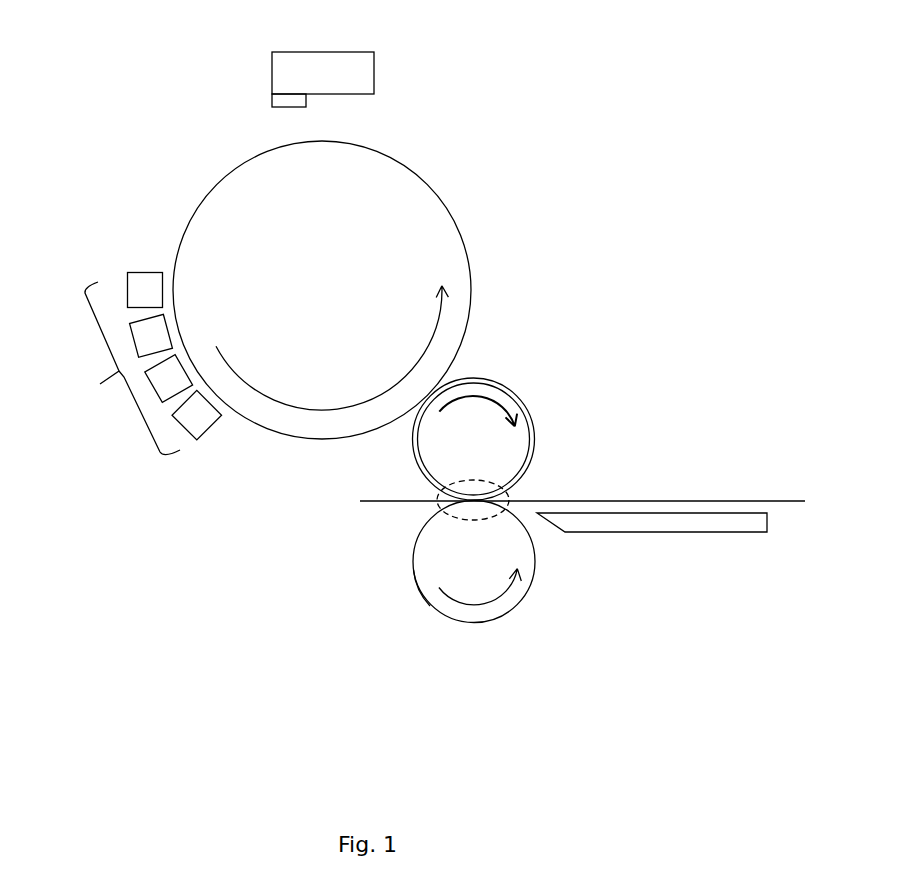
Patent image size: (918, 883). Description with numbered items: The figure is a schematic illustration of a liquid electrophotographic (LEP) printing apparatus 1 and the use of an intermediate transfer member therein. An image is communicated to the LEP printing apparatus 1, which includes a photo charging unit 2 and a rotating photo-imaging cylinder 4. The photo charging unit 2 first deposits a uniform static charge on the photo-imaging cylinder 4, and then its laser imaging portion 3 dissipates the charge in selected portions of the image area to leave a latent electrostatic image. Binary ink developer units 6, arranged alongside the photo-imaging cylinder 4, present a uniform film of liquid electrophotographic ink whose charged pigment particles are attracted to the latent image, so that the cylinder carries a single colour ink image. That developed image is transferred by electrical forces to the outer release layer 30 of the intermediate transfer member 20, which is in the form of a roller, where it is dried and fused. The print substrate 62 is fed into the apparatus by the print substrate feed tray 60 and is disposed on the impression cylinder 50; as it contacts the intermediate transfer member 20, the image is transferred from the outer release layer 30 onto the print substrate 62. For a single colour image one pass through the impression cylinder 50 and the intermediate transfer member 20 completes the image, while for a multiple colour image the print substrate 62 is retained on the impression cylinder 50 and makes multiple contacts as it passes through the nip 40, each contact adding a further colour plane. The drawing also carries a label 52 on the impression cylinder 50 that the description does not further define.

The LEP printing apparatus 1 is at (138, 140).
The photo charging unit 2 is at (329, 52).
The laser imaging portion 3 is at (272, 99).
The photo-imaging cylinder 4 is at (336, 304).
The binary ink developer units 6 is at (151, 364).
The intermediate transfer member 20 is at (483, 452).
The outer release layer 30 is at (513, 390).
The nip 40 is at (425, 500).
The impression cylinder 50 is at (483, 577).
The roller surface 52 is at (418, 592).
The print substrate feed tray 60 is at (630, 532).
The print substrate 62 is at (702, 500).